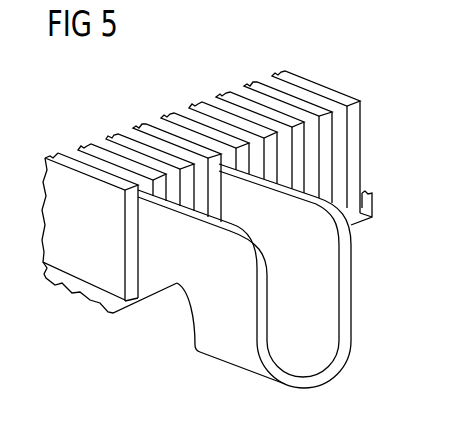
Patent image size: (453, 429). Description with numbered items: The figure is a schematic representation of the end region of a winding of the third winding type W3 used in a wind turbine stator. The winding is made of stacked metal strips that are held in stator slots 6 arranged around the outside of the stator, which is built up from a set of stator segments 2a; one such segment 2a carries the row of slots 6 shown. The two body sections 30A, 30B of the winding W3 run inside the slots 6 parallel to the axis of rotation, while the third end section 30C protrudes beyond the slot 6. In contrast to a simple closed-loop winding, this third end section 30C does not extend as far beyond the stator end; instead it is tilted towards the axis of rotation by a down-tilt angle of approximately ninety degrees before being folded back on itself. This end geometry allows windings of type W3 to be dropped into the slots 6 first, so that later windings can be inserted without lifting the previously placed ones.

The stator slot 6 is at (103, 170).
The stator segment 2a is at (130, 300).
The body section 30A is at (200, 267).
The body section 30B is at (290, 231).
The third end section 30C is at (297, 370).
The third winding type W3 is at (308, 227).